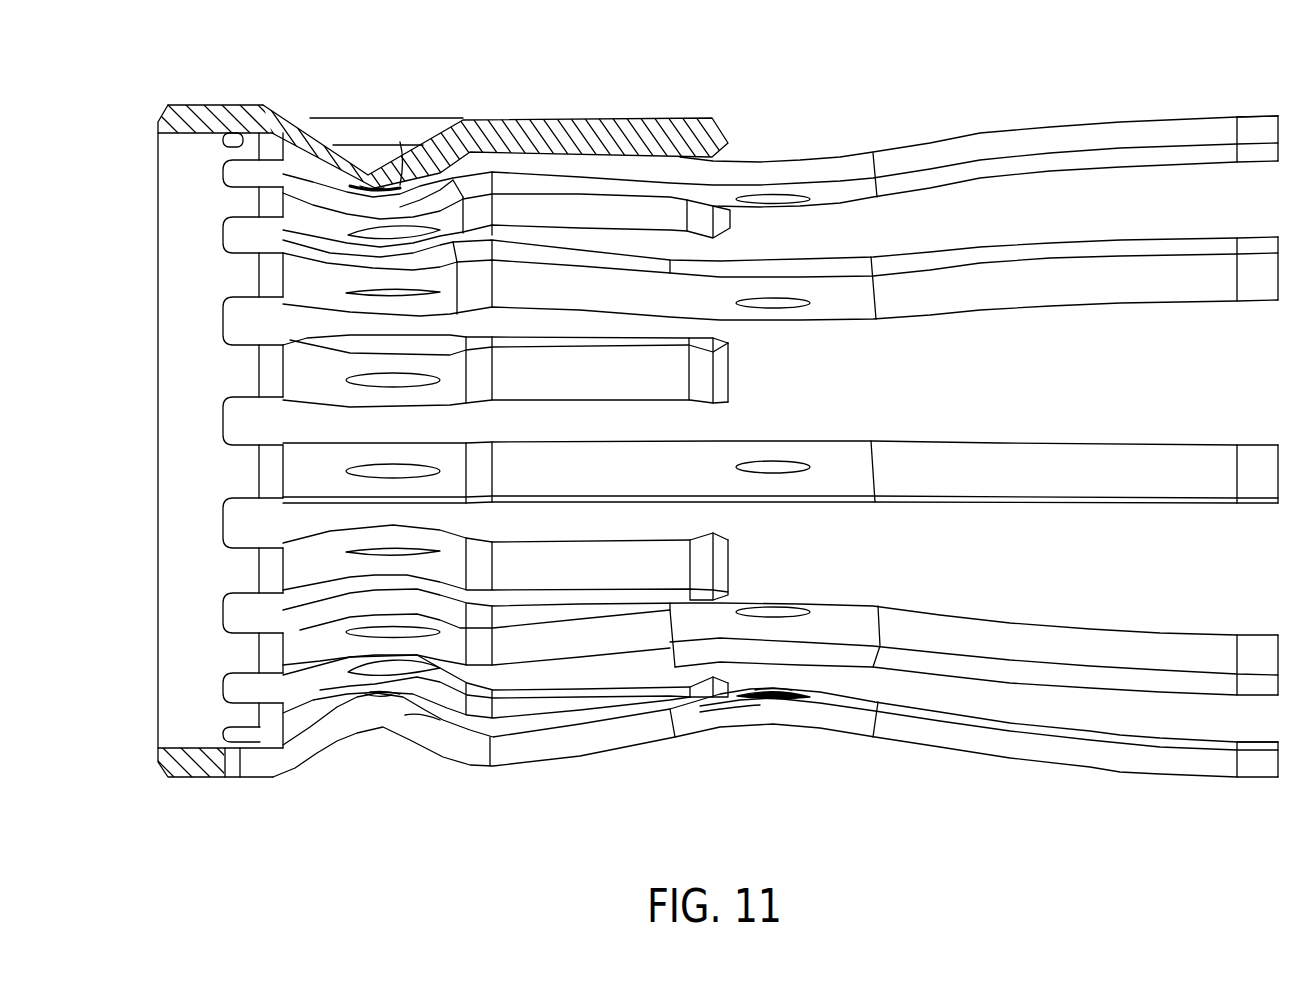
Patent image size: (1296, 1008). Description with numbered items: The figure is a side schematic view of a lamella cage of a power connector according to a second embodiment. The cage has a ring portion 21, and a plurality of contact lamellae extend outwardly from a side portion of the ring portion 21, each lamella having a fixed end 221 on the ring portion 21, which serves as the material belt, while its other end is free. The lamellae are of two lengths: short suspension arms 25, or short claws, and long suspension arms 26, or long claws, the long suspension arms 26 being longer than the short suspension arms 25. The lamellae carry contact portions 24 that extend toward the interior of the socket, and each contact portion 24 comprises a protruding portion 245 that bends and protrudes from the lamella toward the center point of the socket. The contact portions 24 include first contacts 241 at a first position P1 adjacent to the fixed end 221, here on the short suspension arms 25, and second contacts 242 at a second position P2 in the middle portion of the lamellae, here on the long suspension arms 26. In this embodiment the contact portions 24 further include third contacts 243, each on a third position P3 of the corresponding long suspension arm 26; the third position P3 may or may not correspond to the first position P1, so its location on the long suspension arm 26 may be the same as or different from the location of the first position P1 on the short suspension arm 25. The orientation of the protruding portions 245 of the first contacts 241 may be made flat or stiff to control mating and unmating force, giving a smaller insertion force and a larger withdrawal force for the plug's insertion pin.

The ring portion 21 is at (185, 425).
The fixed end 221 is at (243, 278).
The contact portions 24 is at (775, 428).
The first contacts 241 is at (373, 188).
The second contacts 242 is at (773, 694).
The third contacts 243 is at (397, 695).
The protruding portion 245 is at (398, 188).
The short suspension arms 25 is at (703, 220).
The long suspension arms 26 is at (1210, 655).
The first position P1 is at (362, 182).
The second position P2 is at (787, 700).
The third position P3 is at (380, 702).